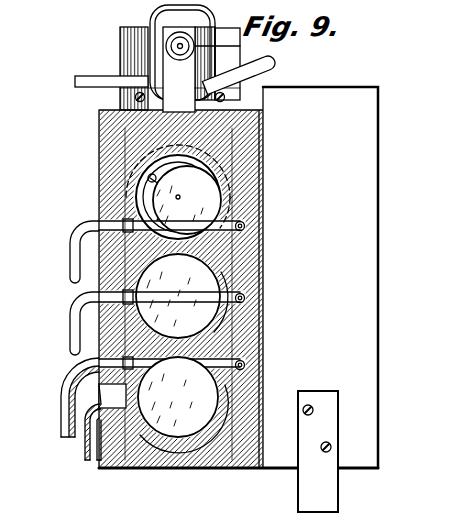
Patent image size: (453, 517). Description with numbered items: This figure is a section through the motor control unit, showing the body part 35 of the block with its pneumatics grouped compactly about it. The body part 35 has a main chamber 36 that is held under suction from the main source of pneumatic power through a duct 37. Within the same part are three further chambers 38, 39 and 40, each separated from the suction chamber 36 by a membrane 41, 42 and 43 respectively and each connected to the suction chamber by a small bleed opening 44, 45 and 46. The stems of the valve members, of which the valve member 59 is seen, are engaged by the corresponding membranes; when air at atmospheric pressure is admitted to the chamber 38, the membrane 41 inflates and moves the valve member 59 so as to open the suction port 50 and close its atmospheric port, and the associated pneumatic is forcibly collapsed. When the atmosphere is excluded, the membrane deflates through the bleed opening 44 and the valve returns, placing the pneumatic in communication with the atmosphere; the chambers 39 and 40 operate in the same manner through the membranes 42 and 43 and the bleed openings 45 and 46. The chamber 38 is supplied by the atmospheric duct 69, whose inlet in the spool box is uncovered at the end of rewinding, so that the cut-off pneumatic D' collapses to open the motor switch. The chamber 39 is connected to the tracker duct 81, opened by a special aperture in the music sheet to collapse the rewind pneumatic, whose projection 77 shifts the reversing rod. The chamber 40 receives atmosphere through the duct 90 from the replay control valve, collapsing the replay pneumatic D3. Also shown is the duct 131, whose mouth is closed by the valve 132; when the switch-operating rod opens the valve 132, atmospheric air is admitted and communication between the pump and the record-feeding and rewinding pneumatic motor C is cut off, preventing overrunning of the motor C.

The pneumatic D' is at (158, 58).
The duct 131 is at (94, 82).
The valve 132 is at (278, 63).
The pneumatic motor C is at (63, 159).
The suction port 50 is at (70, 204).
The valve member 59 is at (222, 168).
The chamber 38 is at (208, 183).
The membrane 41 is at (212, 204).
The bleed opening 44 is at (246, 226).
The main chamber 36 is at (262, 258).
The membrane 42 is at (206, 286).
The bleed opening 45 is at (246, 298).
The chamber 39 is at (228, 312).
The bleed opening 46 is at (246, 365).
The chamber 40 is at (226, 396).
The membrane 43 is at (206, 420).
The atmospheric duct 69 is at (69, 256).
The tracker duct 81 is at (69, 323).
The duct 90 is at (62, 397).
The duct 37 is at (72, 444).
The body part 35 is at (143, 464).
The replay pneumatic D3 is at (378, 326).
The projection 77 is at (328, 488).